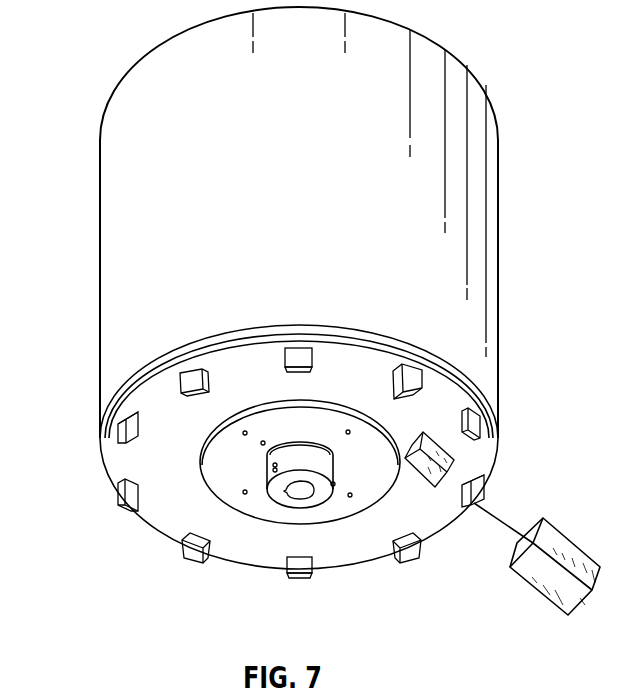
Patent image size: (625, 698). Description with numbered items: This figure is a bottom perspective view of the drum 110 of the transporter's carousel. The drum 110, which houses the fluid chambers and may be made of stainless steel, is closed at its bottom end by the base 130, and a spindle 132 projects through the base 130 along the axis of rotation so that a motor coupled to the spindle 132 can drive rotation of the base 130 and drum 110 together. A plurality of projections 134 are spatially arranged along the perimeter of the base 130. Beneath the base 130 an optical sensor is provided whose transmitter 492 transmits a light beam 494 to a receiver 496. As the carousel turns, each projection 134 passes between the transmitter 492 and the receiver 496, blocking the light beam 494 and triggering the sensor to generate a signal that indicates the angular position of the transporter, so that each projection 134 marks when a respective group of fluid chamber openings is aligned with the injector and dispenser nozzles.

The drum 110 is at (120, 186).
The base 130 is at (160, 518).
The spindle 132 is at (267, 477).
The projections 134 is at (297, 360).
The transmitter 492 is at (550, 602).
The light beam 494 is at (492, 520).
The receiver 496 is at (417, 471).